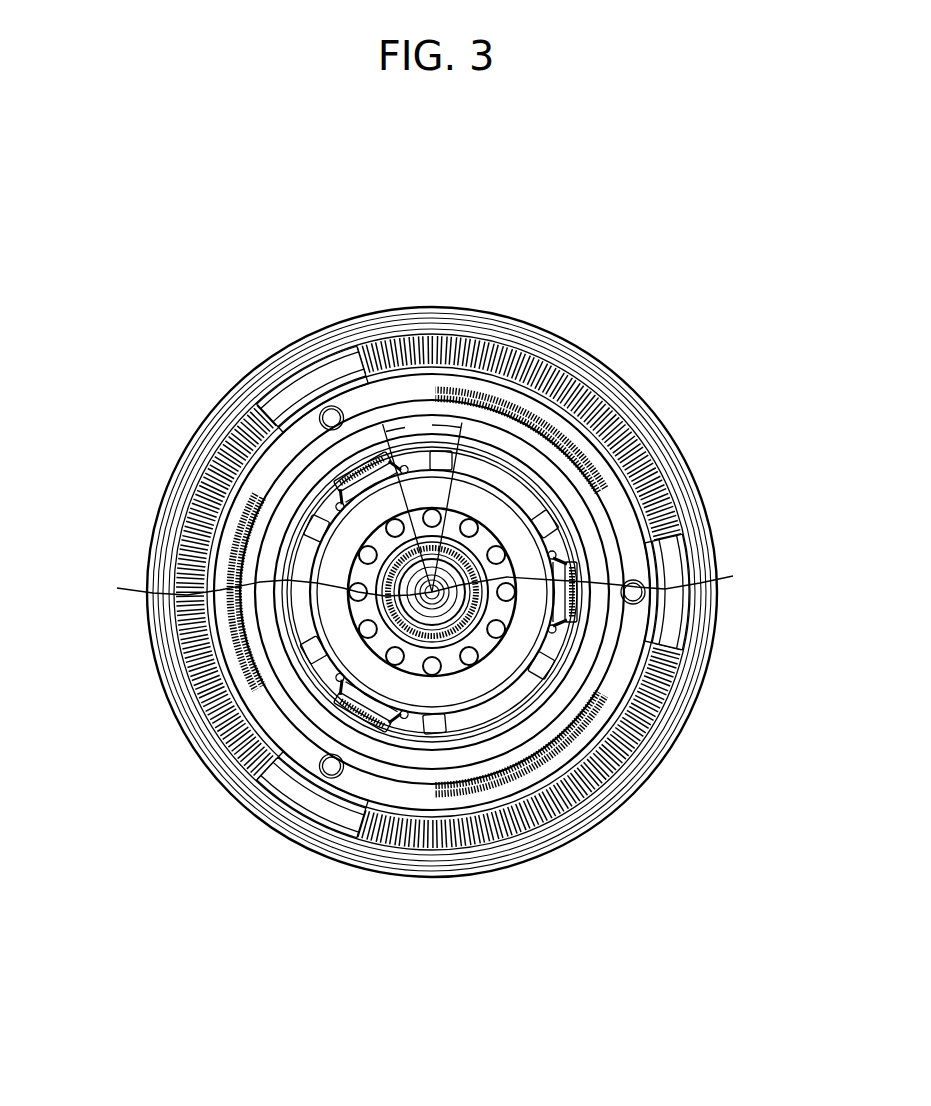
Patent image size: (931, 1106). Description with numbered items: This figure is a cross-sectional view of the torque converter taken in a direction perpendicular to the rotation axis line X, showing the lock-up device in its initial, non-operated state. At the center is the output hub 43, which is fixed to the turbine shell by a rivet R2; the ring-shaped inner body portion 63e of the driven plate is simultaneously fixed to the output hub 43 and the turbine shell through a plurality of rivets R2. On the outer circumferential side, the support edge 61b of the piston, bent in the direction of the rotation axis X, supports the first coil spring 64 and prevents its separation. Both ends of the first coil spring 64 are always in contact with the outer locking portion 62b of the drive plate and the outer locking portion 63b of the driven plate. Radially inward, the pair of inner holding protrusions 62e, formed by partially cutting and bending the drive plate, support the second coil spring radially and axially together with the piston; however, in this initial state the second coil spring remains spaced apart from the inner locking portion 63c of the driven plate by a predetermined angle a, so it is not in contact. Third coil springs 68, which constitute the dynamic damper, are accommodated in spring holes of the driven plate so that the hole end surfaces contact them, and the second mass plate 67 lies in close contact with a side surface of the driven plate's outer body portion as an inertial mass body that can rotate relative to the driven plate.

The output hub 43 is at (428, 637).
The support edge 61b is at (518, 322).
The outer locking portion 62b is at (308, 377).
The inner holding protrusion 62e is at (338, 813).
The outer locking portion 63b is at (345, 385).
The inner locking portion 63c is at (552, 667).
The inner body portion 63e is at (540, 557).
The first coil spring 64 is at (668, 428).
The second mass plate 67 is at (415, 388).
The third coil spring 68 is at (553, 422).
The rotation axis line X is at (436, 579).
The rivet R2 is at (100, 587).
The predetermined angle a is at (422, 504).